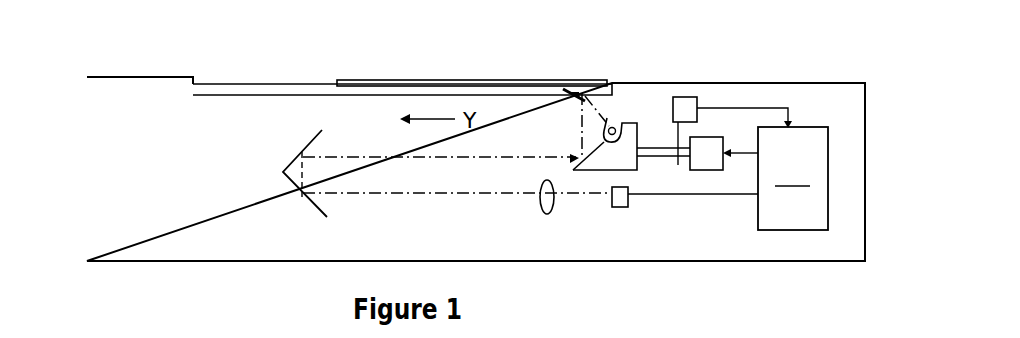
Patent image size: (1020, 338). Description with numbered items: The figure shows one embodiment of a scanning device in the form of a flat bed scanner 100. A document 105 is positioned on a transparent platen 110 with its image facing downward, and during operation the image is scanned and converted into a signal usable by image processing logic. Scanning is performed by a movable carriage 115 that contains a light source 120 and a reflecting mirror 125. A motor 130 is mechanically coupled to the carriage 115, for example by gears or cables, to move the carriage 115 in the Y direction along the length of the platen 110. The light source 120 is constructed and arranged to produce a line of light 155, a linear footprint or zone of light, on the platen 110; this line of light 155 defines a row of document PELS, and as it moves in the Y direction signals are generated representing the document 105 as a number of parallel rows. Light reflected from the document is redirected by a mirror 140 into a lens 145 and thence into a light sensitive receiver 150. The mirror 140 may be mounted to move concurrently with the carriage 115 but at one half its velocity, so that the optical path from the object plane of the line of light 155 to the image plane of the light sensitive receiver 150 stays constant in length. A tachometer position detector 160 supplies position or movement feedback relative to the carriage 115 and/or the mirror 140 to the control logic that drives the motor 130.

The flat bed scanner 100 is at (274, 56).
The document 105 is at (425, 84).
The transparent platen 110 is at (318, 83).
The movable carriage 115 is at (636, 134).
The light source 120 is at (622, 123).
The reflecting mirror 125 is at (576, 160).
The motor 130 is at (712, 137).
The mirror 140 is at (318, 204).
The lens 145 is at (543, 201).
The light sensitive receiver 150 is at (620, 208).
The line of light 155 is at (568, 87).
The tachometer position detector 160 is at (695, 98).